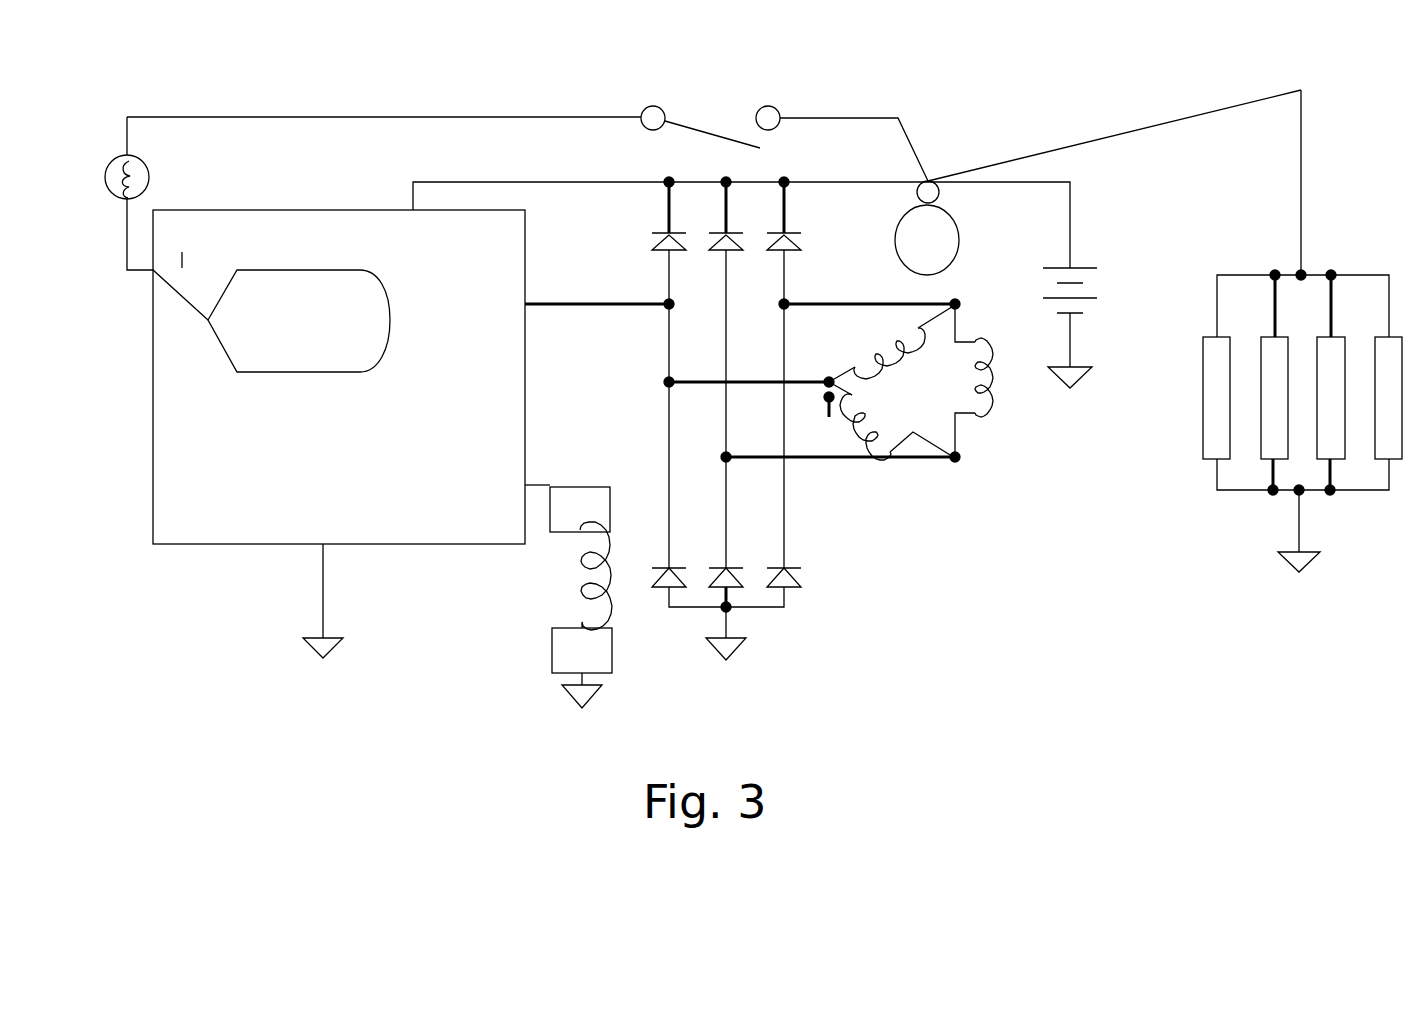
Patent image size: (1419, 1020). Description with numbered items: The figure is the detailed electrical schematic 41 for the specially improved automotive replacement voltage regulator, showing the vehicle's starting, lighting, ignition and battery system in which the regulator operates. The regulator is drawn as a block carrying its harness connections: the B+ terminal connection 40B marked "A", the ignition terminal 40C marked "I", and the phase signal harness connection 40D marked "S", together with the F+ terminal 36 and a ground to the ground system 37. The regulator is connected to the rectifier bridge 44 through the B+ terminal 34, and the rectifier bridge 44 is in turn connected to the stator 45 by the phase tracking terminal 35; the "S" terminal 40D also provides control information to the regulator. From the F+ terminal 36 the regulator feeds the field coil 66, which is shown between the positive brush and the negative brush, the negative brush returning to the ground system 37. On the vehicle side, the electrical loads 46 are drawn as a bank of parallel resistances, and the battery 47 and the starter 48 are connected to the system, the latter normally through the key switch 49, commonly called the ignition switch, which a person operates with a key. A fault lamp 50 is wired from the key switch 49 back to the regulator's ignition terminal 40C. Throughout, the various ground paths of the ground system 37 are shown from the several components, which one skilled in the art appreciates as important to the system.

The B+ terminal 34 is at (723, 216).
The phase tracking terminal 35 is at (599, 292).
The F+ terminal 36 is at (505, 501).
The ground system 37 is at (811, 527).
The B+ terminal connection 40B is at (435, 247).
The ignition terminal 40C is at (194, 246).
The phase signal harness connection 40D is at (486, 335).
The electrical schematic 41 is at (255, 737).
The rectifier bridge 44 is at (820, 534).
The stator 45 is at (911, 382).
The loads to system 46 is at (1181, 450).
The battery 47 is at (1117, 252).
The starter 48 is at (950, 232).
The key switch 49 is at (705, 108).
The fault lamp 50 is at (113, 155).
The field coil 66 is at (557, 573).